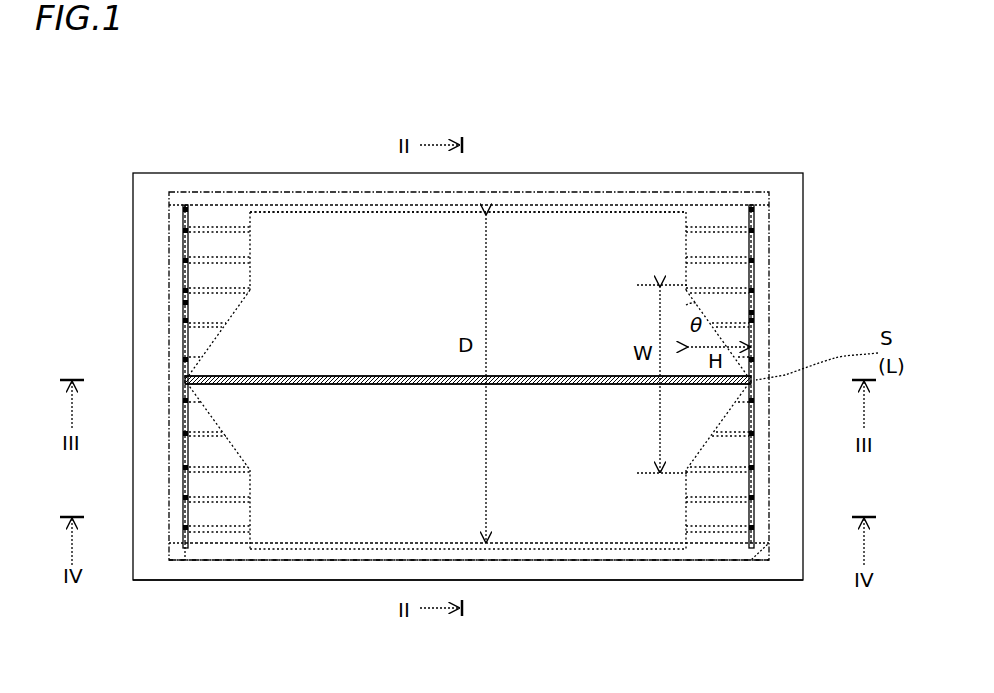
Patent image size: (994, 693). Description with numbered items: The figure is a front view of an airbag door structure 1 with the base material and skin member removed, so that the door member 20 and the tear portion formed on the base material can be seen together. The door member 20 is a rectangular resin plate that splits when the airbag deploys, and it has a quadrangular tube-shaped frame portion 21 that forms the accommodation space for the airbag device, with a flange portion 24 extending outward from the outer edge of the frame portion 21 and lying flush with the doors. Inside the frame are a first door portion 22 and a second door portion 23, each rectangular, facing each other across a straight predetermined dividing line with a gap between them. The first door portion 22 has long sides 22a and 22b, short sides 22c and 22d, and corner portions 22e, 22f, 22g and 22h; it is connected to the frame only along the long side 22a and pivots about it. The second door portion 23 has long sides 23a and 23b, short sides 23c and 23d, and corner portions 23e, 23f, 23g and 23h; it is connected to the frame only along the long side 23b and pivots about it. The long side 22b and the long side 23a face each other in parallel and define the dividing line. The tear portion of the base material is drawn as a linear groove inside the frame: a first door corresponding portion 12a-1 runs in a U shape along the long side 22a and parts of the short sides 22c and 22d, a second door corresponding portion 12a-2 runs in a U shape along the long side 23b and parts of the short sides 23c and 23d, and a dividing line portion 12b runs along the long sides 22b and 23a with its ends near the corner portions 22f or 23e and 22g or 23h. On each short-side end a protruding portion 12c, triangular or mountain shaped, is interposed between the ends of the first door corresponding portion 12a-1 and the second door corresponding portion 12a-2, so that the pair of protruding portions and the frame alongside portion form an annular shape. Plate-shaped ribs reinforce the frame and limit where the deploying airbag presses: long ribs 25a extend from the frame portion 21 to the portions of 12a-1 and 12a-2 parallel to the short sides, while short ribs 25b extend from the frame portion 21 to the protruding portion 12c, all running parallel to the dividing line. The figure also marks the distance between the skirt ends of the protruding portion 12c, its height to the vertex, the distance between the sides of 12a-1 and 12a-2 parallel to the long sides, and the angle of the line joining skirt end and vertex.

The airbag door structure 1 is at (790, 204).
The door member 20 is at (165, 217).
The frame portion 21 is at (643, 192).
The first door portion 22 is at (278, 233).
The long side 22a is at (578, 210).
The long side 22b is at (322, 375).
The short side 22c is at (182, 250).
The short side 22d is at (754, 240).
The corner portion 22e is at (180, 203).
The corner portion 22f is at (185, 382).
The corner portion 22g is at (760, 373).
The corner portion 22h is at (753, 205).
The second door portion 23 is at (277, 528).
The long side 23a is at (321, 386).
The long side 23b is at (600, 553).
The short side 23c is at (180, 485).
The short side 23d is at (755, 516).
The corner portion 23e is at (185, 384).
The corner portion 23f is at (183, 550).
The corner portion 23g is at (749, 548).
The corner portion 23h is at (754, 381).
The flange portion 24 is at (702, 580).
The long rib 25a is at (210, 535).
The short rib 25b is at (180, 338).
The first door corresponding portion 12a-1 is at (503, 210).
The second door corresponding portion 12a-2 is at (510, 545).
The dividing line portion 12b is at (353, 386).
The protruding portion 12c is at (180, 302).